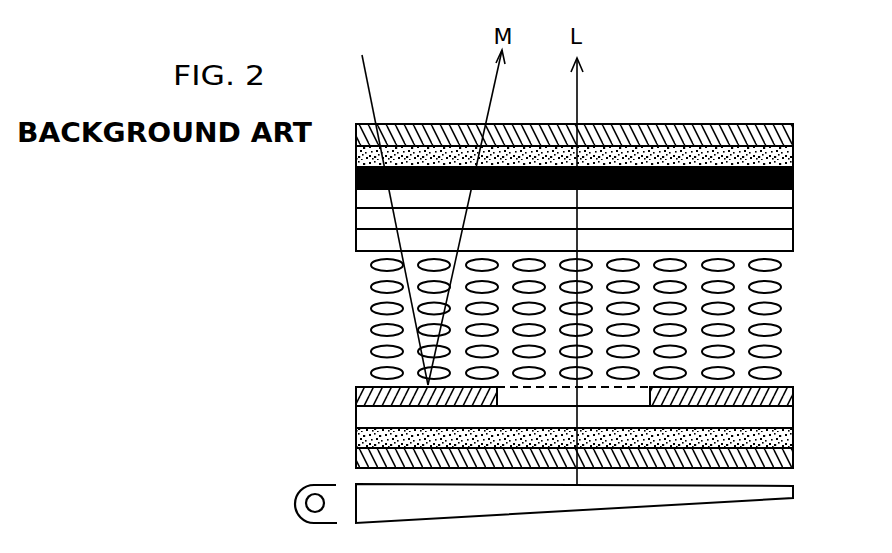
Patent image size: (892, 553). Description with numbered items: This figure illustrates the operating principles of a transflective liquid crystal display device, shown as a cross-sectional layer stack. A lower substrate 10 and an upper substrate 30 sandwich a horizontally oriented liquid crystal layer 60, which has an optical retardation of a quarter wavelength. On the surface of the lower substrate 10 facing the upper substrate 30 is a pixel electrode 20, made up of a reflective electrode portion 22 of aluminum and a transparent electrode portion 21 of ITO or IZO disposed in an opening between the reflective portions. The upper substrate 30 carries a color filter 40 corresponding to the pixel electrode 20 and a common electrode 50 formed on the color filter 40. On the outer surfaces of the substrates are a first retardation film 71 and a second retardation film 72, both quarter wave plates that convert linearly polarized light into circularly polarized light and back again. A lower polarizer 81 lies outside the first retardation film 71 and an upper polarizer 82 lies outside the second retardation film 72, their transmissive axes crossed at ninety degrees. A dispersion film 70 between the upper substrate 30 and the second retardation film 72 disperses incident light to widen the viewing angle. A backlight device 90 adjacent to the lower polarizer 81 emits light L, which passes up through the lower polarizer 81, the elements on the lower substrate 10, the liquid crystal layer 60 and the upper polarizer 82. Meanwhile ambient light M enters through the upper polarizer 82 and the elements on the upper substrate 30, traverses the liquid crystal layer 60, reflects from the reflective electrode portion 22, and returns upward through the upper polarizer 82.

The upper polarizer 82 is at (793, 134).
The second retardation film 72 is at (793, 158).
The dispersion film 70 is at (793, 178).
The upper substrate 30 is at (793, 200).
The color filter 40 is at (793, 218).
The common electrode 50 is at (793, 242).
The liquid crystal layer 60 is at (775, 323).
The pixel electrode 20 is at (621, 372).
The transparent electrode portion 21 is at (617, 398).
The reflective electrode portion 22 is at (795, 397).
The lower substrate 10 is at (793, 418).
The first retardation film 71 is at (793, 441).
The lower polarizer 81 is at (793, 463).
The backlight device 90 is at (793, 492).